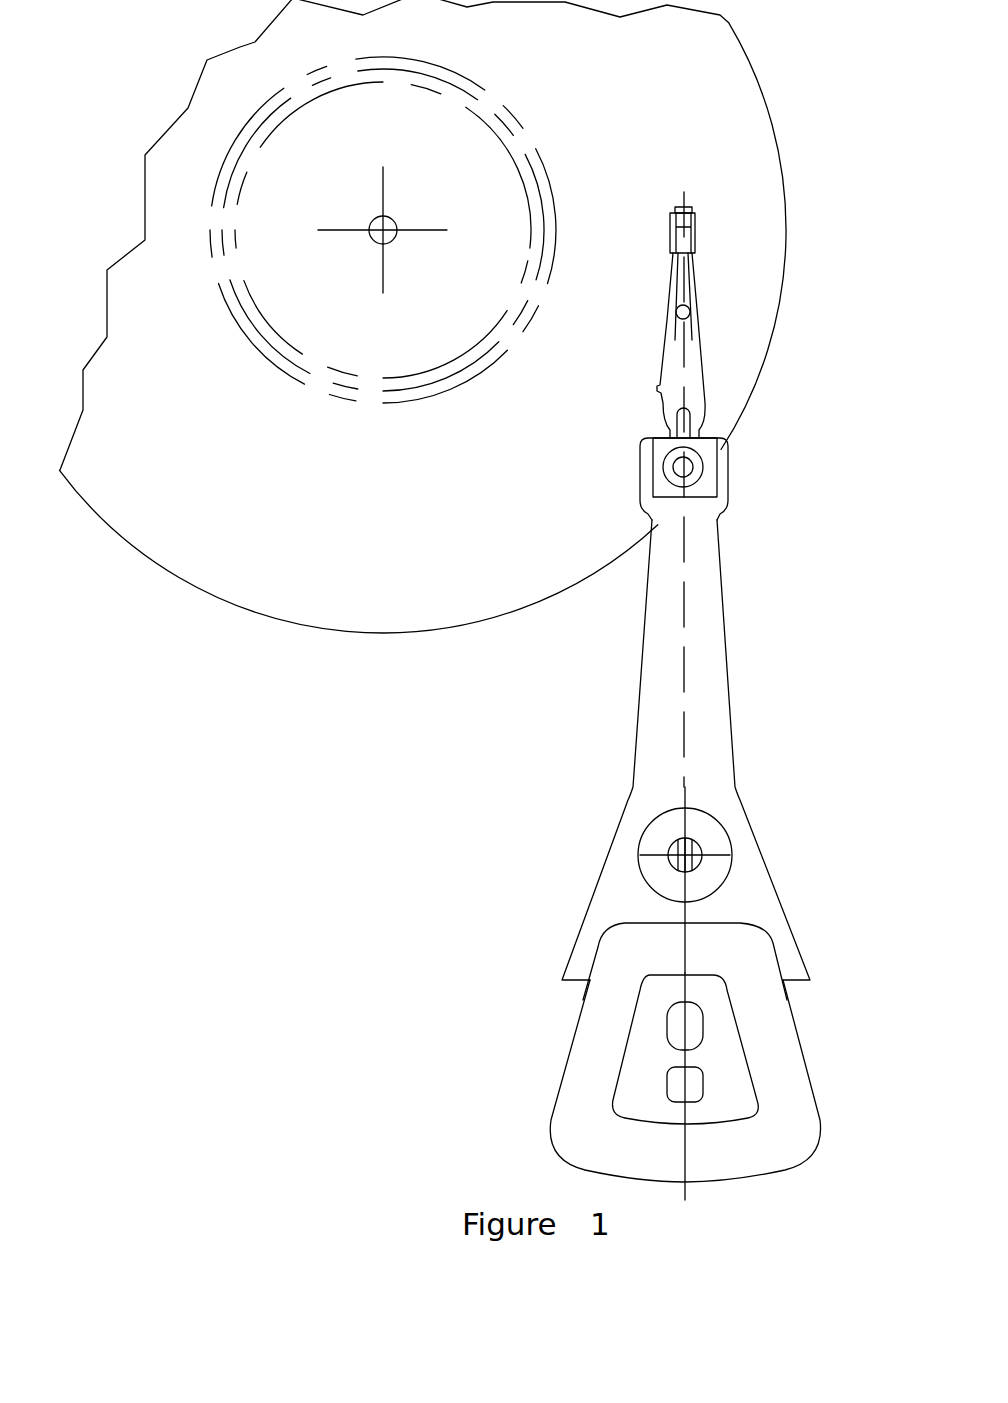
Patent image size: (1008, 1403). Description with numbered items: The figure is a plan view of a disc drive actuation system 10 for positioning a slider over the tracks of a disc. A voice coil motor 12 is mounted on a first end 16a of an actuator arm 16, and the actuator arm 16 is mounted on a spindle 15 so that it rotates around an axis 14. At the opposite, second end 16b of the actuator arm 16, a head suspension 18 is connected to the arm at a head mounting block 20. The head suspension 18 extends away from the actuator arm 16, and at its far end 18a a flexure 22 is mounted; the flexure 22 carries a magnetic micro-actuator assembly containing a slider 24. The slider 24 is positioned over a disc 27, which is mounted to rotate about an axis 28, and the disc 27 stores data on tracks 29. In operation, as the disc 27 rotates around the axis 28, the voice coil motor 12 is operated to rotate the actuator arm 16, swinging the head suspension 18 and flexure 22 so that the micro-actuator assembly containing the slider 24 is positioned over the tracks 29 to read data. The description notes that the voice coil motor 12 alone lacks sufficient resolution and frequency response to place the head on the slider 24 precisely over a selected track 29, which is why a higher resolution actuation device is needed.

The disc drive actuation system 10 is at (468, 833).
The voice coil motor 12 is at (557, 1157).
The axis 14 is at (700, 852).
The spindle 15 is at (670, 865).
The actuator arm 16 is at (642, 657).
The first end of actuator arm 16a is at (583, 965).
The second end of actuator arm 16b is at (698, 515).
The head suspension 18 is at (666, 321).
The end of head suspension 18a is at (682, 282).
The head mounting block 20 is at (653, 468).
The flexure 22 is at (670, 233).
The slider 24 is at (684, 205).
The disc 27 is at (355, 633).
The axis 28 is at (373, 238).
The tracks 29 is at (552, 192).